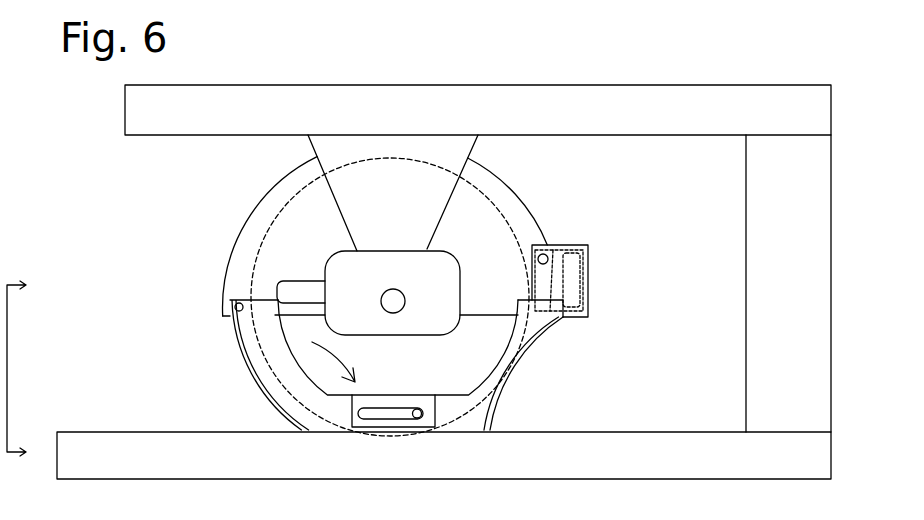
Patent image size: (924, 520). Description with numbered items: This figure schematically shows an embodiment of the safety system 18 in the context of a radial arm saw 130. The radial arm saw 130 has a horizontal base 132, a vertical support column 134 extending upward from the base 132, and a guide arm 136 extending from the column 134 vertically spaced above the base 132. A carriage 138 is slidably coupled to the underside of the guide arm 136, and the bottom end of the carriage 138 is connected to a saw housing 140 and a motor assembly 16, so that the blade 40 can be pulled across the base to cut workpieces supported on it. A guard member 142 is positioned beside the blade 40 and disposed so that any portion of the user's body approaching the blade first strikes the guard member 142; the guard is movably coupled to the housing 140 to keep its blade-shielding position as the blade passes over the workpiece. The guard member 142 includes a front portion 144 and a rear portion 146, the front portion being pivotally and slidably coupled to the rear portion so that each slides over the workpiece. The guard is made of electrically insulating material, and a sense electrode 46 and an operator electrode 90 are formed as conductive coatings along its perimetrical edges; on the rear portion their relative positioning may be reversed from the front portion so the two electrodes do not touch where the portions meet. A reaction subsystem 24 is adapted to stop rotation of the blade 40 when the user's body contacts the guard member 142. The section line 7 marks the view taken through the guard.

The radial arm saw 130 is at (444, 251).
The guide arm 136 is at (678, 125).
The vertical support column 134 is at (812, 367).
The horizontal base 132 is at (542, 474).
The section line 7- 7 is at (25, 369).
The carriage 138 is at (469, 154).
The safety system 18 is at (308, 296).
The saw housing 140 is at (236, 249).
The guard member 142 is at (345, 365).
The front portion 144 is at (235, 365).
The sense electrode 46 is at (230, 312).
The rear portion 146 is at (557, 365).
The operator electrode 90 is at (562, 335).
The blade 40 is at (373, 384).
The motor assembly 16 is at (332, 325).
The reaction subsystem 24 is at (638, 215).